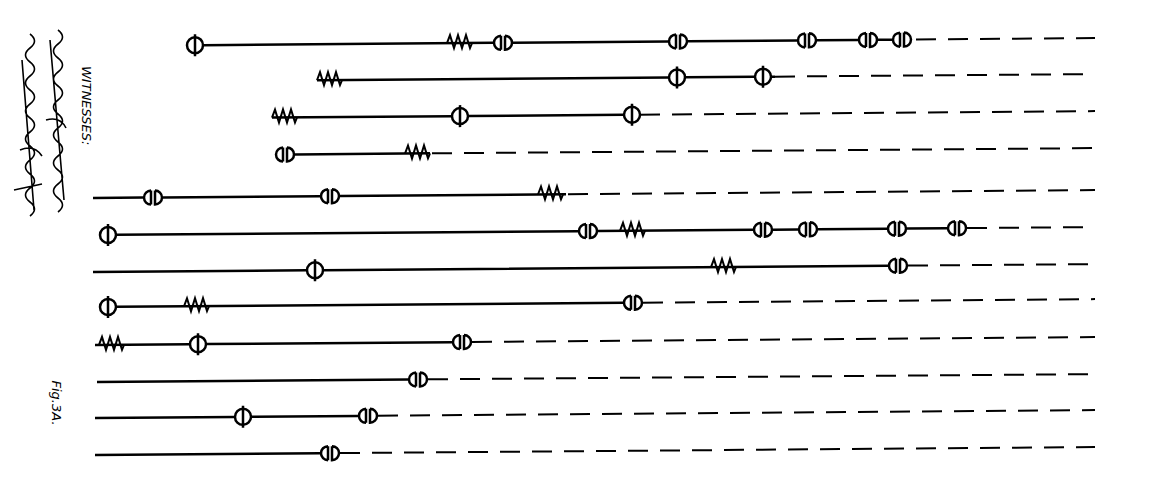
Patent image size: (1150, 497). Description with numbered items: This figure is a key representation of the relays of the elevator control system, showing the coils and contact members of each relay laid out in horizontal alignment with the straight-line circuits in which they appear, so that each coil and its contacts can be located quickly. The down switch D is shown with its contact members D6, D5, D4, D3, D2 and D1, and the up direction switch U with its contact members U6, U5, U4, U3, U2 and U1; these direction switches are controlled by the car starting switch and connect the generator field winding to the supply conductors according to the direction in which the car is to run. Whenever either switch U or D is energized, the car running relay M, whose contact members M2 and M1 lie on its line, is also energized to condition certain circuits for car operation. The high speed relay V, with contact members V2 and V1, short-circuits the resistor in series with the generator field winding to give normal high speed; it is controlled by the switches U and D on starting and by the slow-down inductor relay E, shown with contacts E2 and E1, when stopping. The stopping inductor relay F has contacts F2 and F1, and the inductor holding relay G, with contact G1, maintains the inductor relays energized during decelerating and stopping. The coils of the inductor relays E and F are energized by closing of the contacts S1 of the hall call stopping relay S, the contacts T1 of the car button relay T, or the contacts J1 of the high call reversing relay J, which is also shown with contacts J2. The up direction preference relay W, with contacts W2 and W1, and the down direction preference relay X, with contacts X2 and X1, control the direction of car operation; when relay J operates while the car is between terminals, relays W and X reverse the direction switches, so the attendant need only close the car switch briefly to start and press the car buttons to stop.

The down switch D is at (447, 44).
The relay D contact D6 is at (202, 42).
The relay D contact D5 is at (512, 41).
The relay D contact D4 is at (687, 41).
The relay D contact D3 is at (799, 42).
The relay D contact D2 is at (860, 40).
The relay D contact D1 is at (908, 40).
The slow-down inductor relay E is at (314, 84).
The relay E contact E2 is at (684, 77).
The relay E contact E1 is at (770, 76).
The stopping inductor relay F is at (269, 121).
The relay F contact F2 is at (467, 113).
The relay F contact F1 is at (639, 113).
The inductor holding relay G is at (428, 157).
The relay G contact G1 is at (272, 157).
The car running relay M is at (540, 193).
The relay M contact M2 is at (160, 194).
The relay M contact M1 is at (338, 193).
The up direction switch U is at (642, 232).
The relay U contact U6 is at (115, 231).
The relay U contact U5 is at (580, 231).
The relay U contact U4 is at (754, 231).
The relay U contact U3 is at (816, 231).
The relay U contact U2 is at (889, 229).
The relay U contact U1 is at (964, 231).
The high speed relay V is at (730, 266).
The relay V contact V2 is at (322, 267).
The relay V contact V1 is at (907, 267).
The up direction preference relay W is at (209, 302).
The relay W contact W2 is at (115, 302).
The relay W contact W1 is at (641, 302).
The down direction preference relay X is at (121, 342).
The relay X contact X2 is at (205, 340).
The relay X contact X1 is at (471, 340).
The car call stopping relay T is at (606, 377).
The contacts of car button relay T1 is at (427, 377).
The high call reversing relay J is at (603, 414).
The contact J2 is at (250, 413).
The contacts of high call reversing relay J1 is at (377, 413).
The floor call stopping relay S is at (605, 451).
The contacts of hall call stopping relay S1 is at (339, 450).